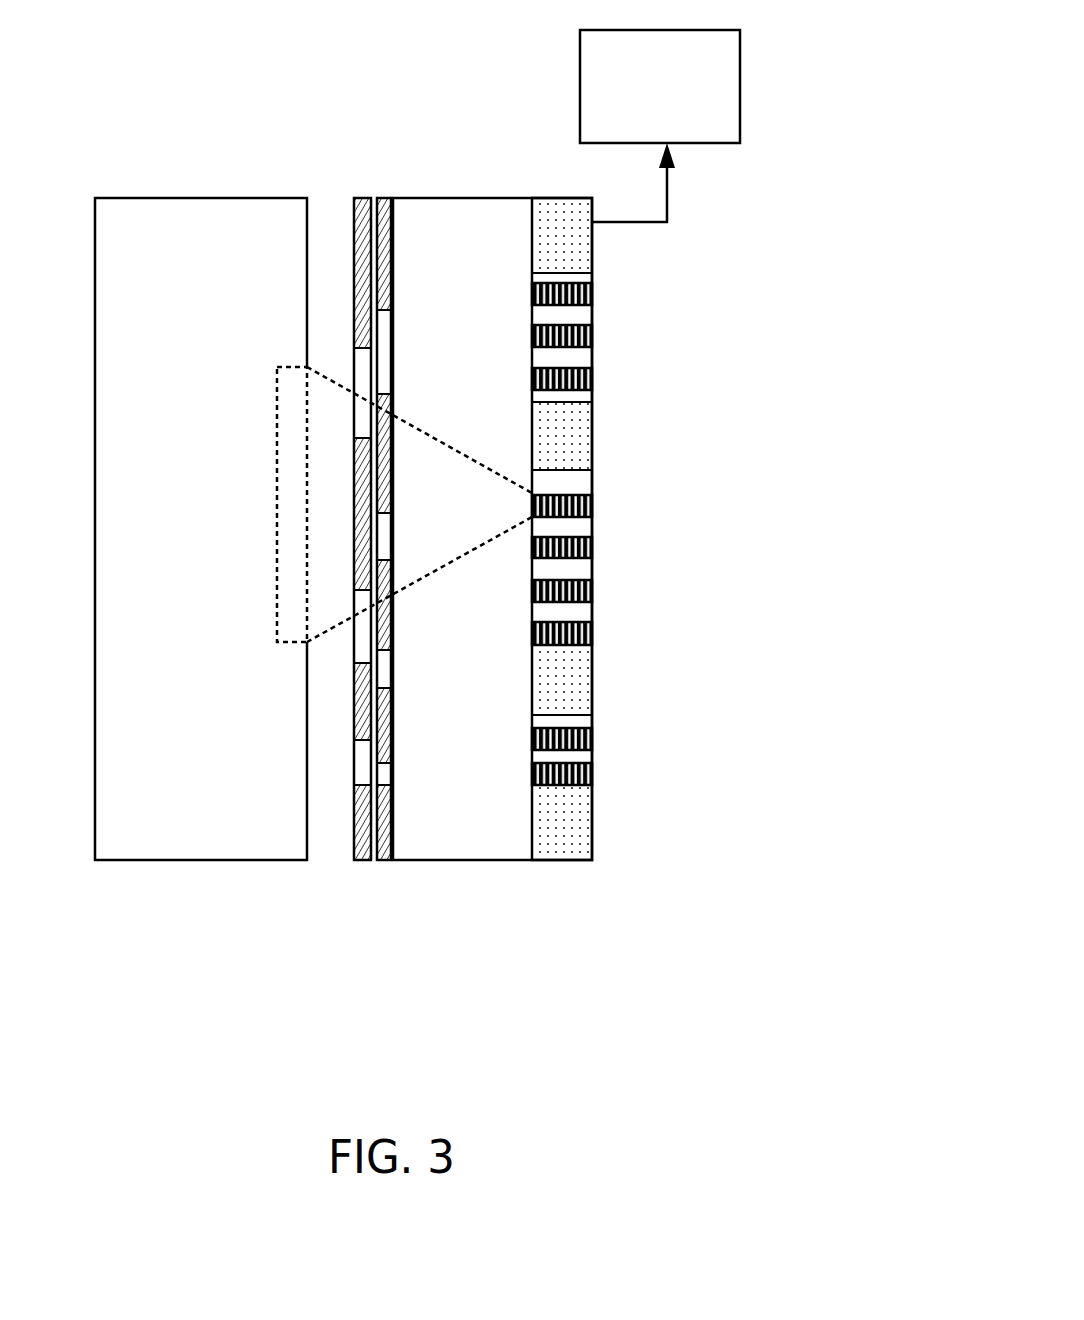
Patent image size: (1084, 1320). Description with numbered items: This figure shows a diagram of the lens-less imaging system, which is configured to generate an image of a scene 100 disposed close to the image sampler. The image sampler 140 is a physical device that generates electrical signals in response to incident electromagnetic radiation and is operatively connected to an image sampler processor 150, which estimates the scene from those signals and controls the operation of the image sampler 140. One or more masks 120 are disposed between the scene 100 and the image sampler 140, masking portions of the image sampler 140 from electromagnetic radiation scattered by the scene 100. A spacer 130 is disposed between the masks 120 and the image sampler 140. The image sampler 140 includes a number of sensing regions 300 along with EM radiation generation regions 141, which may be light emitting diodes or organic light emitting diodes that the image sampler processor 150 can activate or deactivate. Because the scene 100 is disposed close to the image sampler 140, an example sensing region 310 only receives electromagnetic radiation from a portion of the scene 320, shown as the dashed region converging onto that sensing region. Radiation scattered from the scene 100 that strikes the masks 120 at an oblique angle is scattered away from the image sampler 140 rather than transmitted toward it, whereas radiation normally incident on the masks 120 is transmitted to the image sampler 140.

The scene 100 is at (181, 552).
The masks 120 is at (380, 912).
The spacer 130 is at (457, 912).
The image sampler 140 is at (654, 613).
The EM radiation generation regions 141 is at (638, 529).
The image sampler processor 150 is at (640, 139).
The sensing regions 300 is at (652, 336).
The selected sensor pixel row 310 is at (592, 503).
The portion of the scene 320 is at (265, 349).